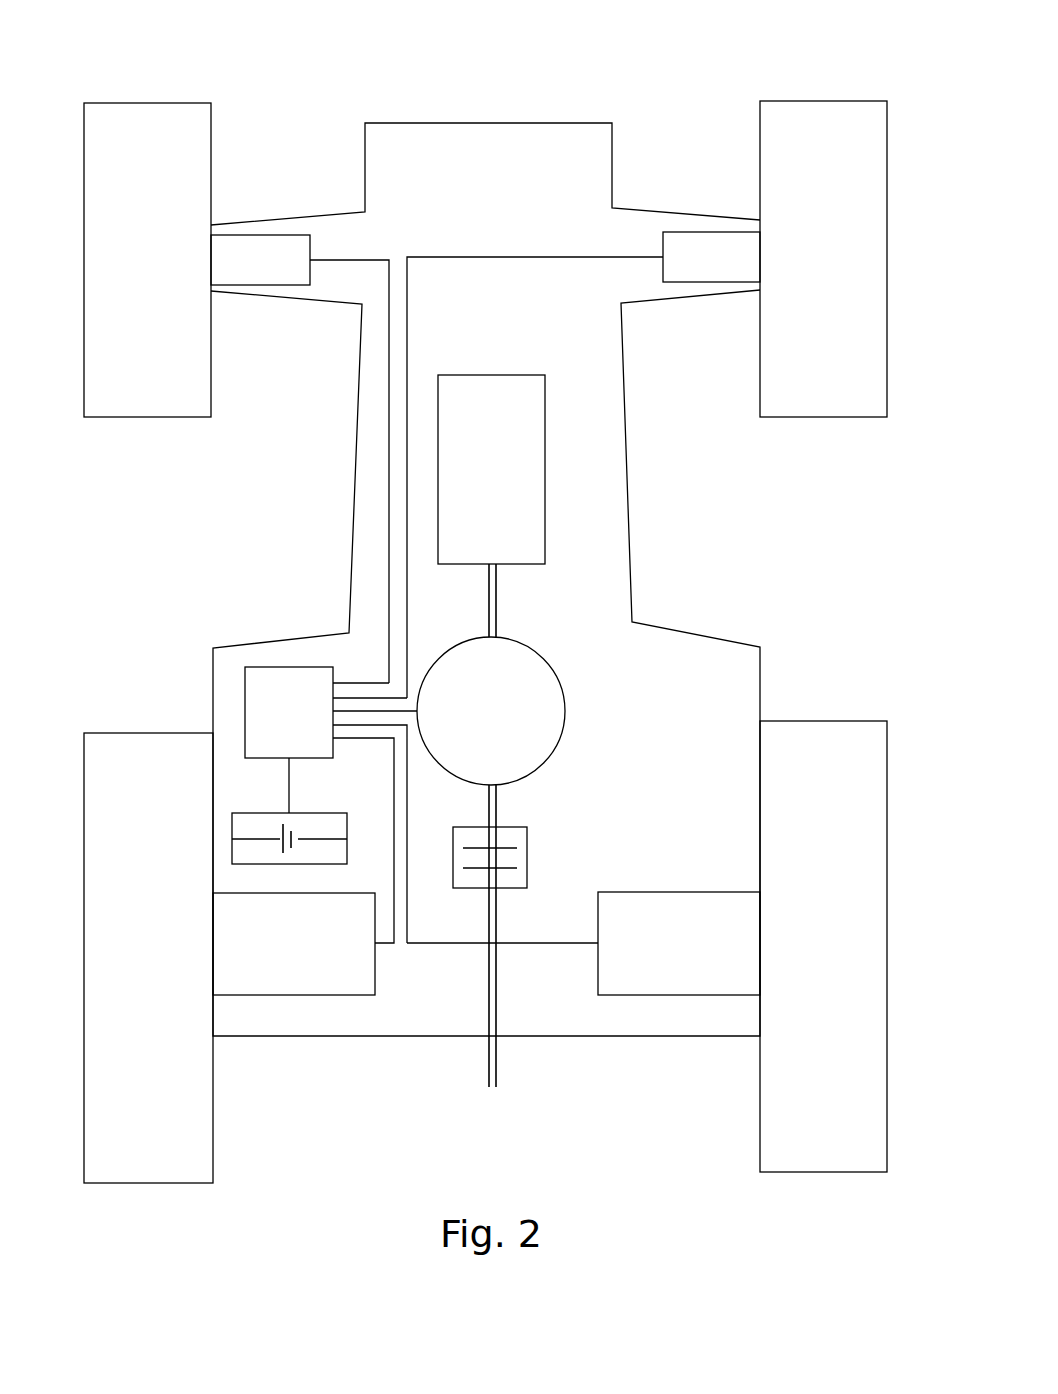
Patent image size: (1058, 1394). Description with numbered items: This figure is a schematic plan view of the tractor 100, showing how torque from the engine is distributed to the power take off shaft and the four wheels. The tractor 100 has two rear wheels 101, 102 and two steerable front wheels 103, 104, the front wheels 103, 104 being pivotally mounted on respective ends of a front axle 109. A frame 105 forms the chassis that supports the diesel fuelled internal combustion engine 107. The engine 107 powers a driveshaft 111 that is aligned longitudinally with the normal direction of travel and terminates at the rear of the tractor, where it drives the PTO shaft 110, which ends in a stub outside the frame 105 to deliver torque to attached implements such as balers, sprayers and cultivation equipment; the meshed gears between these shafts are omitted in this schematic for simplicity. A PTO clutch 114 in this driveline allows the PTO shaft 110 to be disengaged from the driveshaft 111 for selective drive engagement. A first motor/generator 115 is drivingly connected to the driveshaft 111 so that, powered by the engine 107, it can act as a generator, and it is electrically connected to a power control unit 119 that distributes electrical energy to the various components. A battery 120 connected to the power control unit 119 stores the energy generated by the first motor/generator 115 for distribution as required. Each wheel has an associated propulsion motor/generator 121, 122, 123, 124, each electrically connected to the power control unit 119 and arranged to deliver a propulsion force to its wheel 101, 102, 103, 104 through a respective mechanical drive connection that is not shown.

The tractor 100 is at (280, 62).
The rear wheel 101 is at (102, 1183).
The rear wheel 102 is at (855, 1172).
The front wheel 103 is at (125, 417).
The front wheel 104 is at (855, 417).
The frame 105 is at (632, 560).
The internal combustion engine 107 is at (507, 483).
The front axle 109 is at (300, 215).
The power take off shaft 110 is at (497, 1060).
The driveshaft 111 is at (497, 608).
The PTO clutch 114 is at (527, 838).
The first motor/generator 115 is at (565, 711).
The power control unit 119 is at (268, 729).
The battery 120 is at (341, 813).
The propulsion motor/generator 121 is at (327, 995).
The propulsion motor/generator 122 is at (693, 995).
The propulsion motor/generator 123 is at (267, 285).
The propulsion motor/generator 124 is at (705, 282).